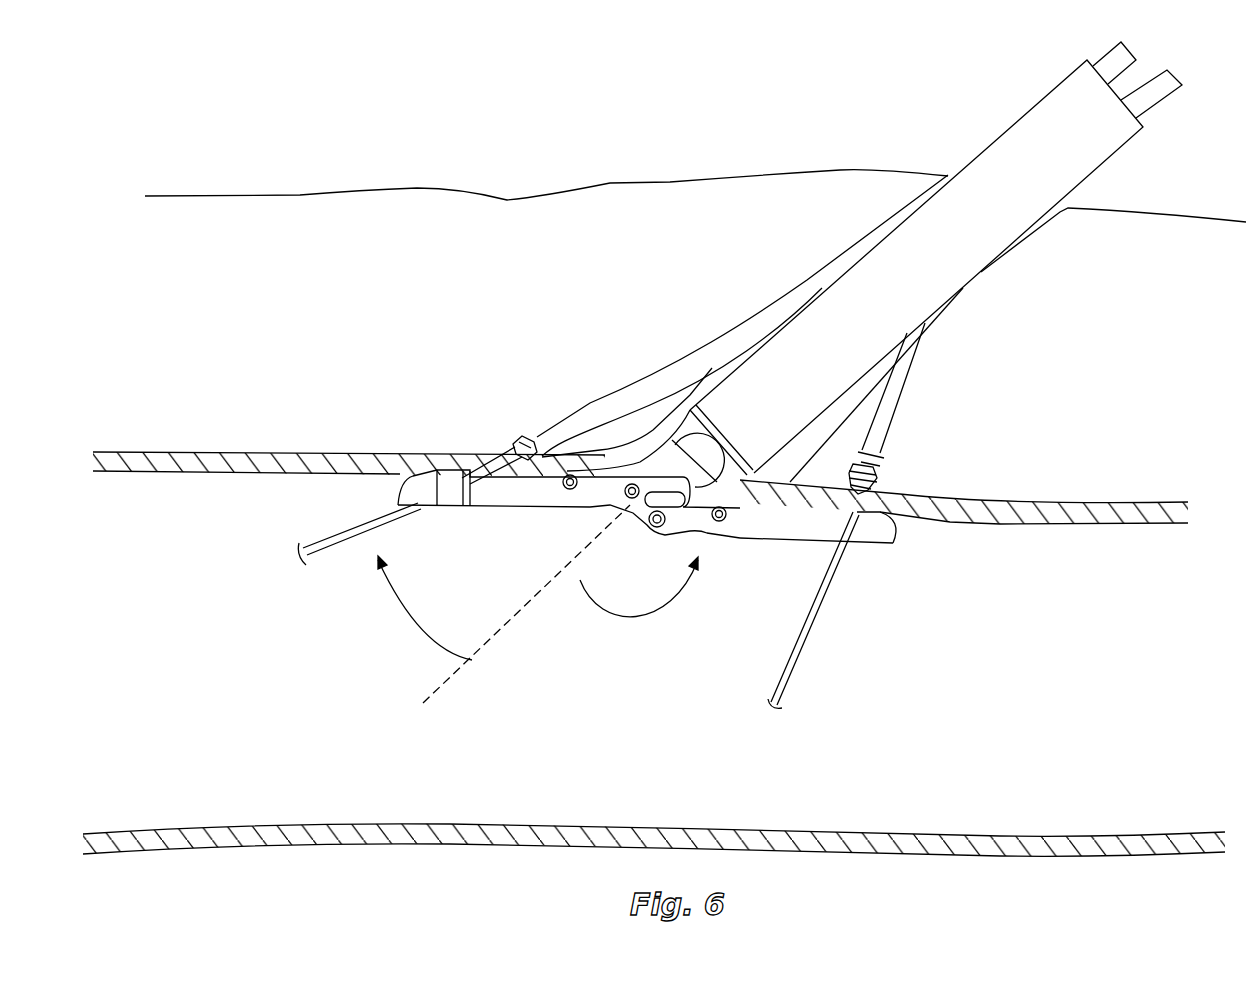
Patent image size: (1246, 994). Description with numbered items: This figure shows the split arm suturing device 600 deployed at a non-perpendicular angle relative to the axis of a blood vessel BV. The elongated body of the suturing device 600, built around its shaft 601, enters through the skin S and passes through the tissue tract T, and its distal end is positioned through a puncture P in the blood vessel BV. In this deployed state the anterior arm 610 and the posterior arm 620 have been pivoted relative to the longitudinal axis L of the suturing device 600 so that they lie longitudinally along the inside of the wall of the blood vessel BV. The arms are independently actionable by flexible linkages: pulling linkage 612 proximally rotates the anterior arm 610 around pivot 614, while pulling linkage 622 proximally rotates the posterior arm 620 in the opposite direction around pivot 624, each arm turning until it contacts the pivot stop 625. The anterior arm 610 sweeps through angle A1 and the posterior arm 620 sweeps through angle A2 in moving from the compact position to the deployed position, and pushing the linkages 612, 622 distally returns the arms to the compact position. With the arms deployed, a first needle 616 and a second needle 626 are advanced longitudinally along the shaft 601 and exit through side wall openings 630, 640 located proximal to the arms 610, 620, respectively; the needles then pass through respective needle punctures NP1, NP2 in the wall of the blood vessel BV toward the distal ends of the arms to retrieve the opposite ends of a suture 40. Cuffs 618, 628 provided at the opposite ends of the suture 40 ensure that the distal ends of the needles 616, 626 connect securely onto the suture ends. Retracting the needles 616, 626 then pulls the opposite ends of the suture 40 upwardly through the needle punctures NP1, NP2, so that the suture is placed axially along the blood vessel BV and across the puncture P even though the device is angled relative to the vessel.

The split arm suturing device 600 is at (870, 203).
The shaft 601 is at (1002, 222).
The anterior arm 610 is at (510, 496).
The linkage 612 is at (632, 458).
The pivot 614 is at (625, 505).
The first needle 616 is at (687, 360).
The cuff 618 is at (523, 438).
The posterior arm 620 is at (772, 523).
The linkage 622 is at (768, 504).
The pivot 624 is at (660, 528).
The pivot stop 625 is at (660, 496).
The second needle 626 is at (903, 377).
The cuff 628 is at (890, 463).
The side wall opening 630 is at (821, 269).
The side wall opening 640 is at (943, 314).
The suture 40 is at (316, 517).
The skin S is at (669, 182).
The tissue tract T is at (1101, 194).
The puncture P is at (778, 465).
The needle puncture NP1 is at (485, 447).
The needle puncture NP2 is at (895, 482).
The angle A1 is at (403, 612).
The angle A2 is at (640, 620).
The longitudinal axis L is at (493, 642).
The blood vessel BV is at (983, 653).